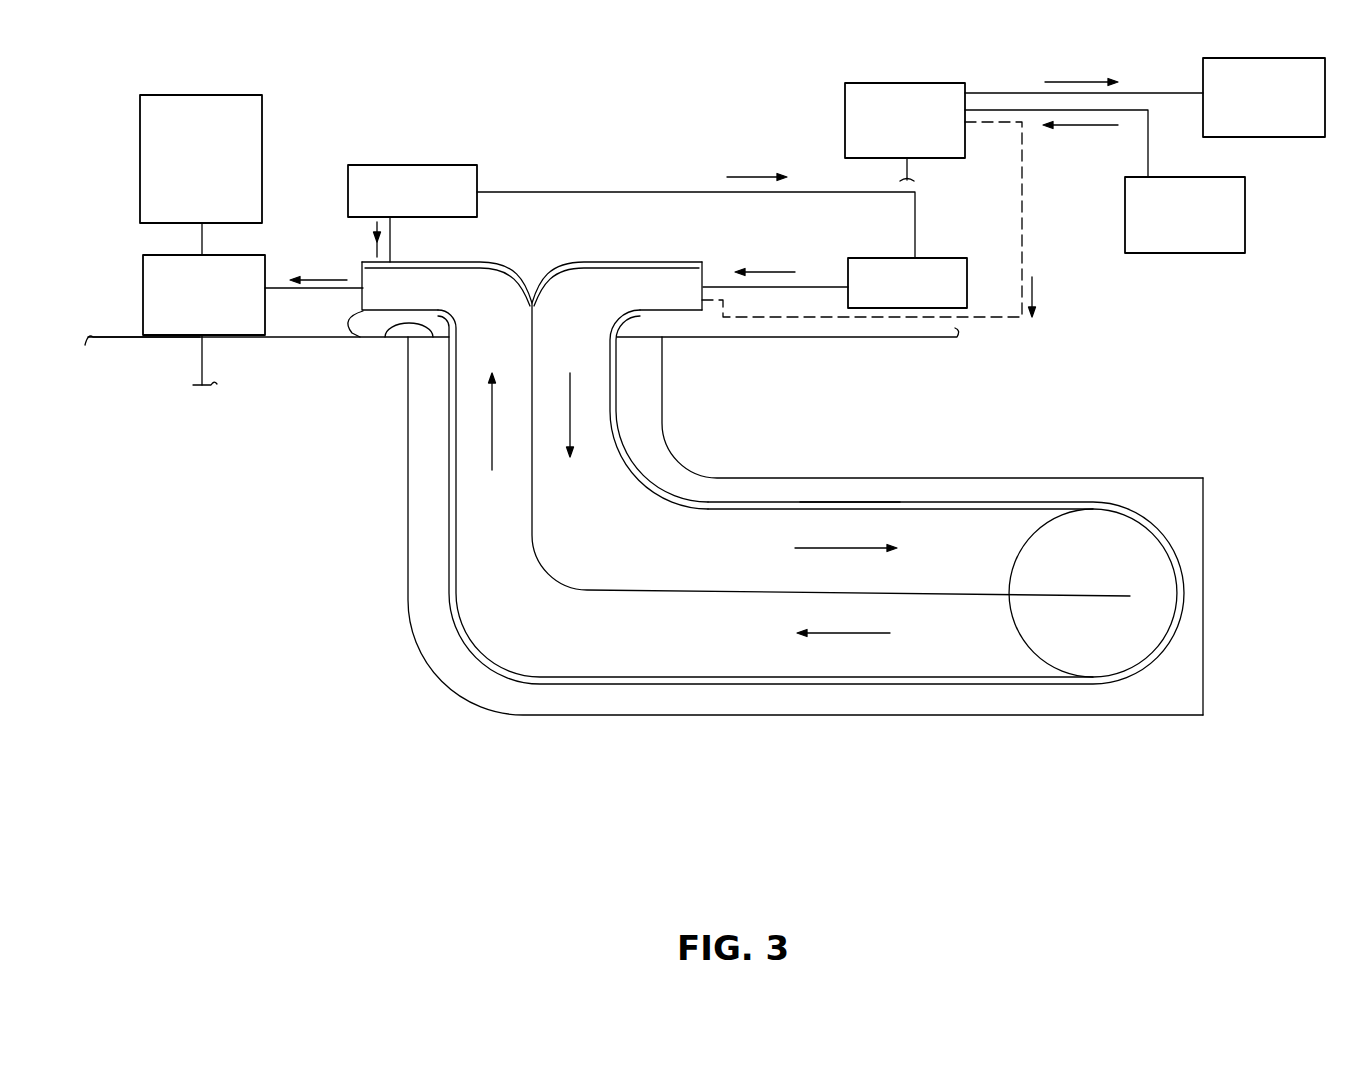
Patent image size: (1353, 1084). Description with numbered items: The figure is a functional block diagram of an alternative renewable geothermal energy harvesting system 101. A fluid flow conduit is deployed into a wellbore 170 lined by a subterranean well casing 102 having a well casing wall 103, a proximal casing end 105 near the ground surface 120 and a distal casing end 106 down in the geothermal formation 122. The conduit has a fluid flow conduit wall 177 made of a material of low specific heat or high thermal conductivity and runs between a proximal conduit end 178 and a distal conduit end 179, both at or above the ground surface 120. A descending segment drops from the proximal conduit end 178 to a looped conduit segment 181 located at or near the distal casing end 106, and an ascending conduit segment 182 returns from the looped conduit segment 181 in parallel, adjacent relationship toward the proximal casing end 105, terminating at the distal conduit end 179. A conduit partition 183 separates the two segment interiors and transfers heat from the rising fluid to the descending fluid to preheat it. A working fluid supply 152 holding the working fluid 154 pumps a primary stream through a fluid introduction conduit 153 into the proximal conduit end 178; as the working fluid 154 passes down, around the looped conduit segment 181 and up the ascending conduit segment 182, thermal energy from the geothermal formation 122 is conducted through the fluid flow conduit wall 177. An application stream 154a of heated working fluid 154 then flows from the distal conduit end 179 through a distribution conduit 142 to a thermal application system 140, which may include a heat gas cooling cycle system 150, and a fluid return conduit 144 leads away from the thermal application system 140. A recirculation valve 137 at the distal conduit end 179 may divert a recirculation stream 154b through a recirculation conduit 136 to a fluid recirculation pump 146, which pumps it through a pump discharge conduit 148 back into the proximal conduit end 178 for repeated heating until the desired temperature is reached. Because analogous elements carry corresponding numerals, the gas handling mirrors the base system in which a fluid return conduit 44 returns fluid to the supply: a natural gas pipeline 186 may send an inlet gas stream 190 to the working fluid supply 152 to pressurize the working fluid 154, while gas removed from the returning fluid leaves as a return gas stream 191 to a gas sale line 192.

The fluid return conduit 44 is at (902, 168).
The renewable geothermal energy harvesting system 101 is at (520, 100).
The well casing 102 is at (398, 487).
The well casing wall 103 is at (408, 545).
The proximal casing end 105 is at (398, 338).
The distal casing end 106 is at (1203, 642).
The ground surface 120 is at (105, 337).
The geothermal formation 122 is at (1114, 842).
The recirculation conduit 136 is at (600, 192).
The recirculation valve 137 is at (470, 165).
The thermal application system 140 is at (143, 268).
The distribution conduit 142 is at (332, 292).
The fluid return conduit 144 is at (207, 353).
The fluid recirculation pump 146 is at (893, 309).
The pump discharge conduit 148 is at (713, 286).
The heat gas cooling cycle system 150 is at (262, 128).
The working fluid supply 152 is at (948, 159).
The fluid introduction conduit 153 is at (1022, 320).
The working fluid 154 is at (490, 442).
The application stream 154a is at (344, 252).
The recirculation stream 154b is at (372, 234).
The wellbore 170 is at (658, 398).
The fluid flow conduit wall 177 is at (742, 527).
The proximal conduit end 178 is at (705, 312).
The distal conduit end 179 is at (357, 338).
The looped conduit segment 181 is at (1182, 588).
The ascending conduit segment 182 is at (858, 500).
The conduit partition 183 is at (1033, 562).
The natural gas pipeline 186 is at (1210, 253).
The inlet gas stream 190 is at (1072, 142).
The return gas stream 191 is at (1070, 82).
The gas sale line 192 is at (1275, 137).